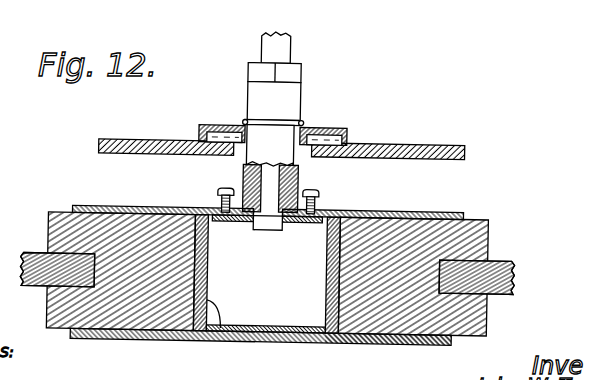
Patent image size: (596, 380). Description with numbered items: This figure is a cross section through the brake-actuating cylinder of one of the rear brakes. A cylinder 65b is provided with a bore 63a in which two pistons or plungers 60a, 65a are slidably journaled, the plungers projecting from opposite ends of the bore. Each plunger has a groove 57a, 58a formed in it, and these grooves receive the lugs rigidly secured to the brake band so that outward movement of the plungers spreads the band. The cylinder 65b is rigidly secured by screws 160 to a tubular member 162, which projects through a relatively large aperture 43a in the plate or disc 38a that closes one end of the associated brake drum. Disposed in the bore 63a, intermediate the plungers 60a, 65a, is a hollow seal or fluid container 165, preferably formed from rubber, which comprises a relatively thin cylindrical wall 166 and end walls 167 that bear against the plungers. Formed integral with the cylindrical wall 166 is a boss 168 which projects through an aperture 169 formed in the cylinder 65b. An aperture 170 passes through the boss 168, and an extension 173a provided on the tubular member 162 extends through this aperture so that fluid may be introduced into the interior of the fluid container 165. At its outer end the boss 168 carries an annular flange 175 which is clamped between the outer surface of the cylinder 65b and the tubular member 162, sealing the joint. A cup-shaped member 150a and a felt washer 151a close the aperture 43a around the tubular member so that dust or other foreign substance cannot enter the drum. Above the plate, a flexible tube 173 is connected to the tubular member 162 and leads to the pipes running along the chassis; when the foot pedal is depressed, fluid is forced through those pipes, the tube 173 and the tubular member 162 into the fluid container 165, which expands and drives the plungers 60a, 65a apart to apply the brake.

The flexible tube 173 is at (283, 50).
The extension 173a is at (268, 231).
The felt washer 151a is at (232, 129).
The cup-shaped member 150a is at (201, 134).
The aperture 43a is at (307, 146).
The plate or disc 38a is at (432, 149).
The aperture 169 is at (242, 212).
The tubular member 162 is at (298, 176).
The annular flange 175 is at (300, 200).
The screws 160 is at (220, 192).
The aperture 170 is at (253, 222).
The boss 168 is at (282, 222).
The plunger 60a is at (133, 229).
The plunger 65a is at (367, 231).
The cylinder 65b is at (318, 343).
The groove 57a is at (95, 288).
The groove 58a is at (438, 259).
The end walls 167 is at (208, 267).
The bore 63a is at (183, 333).
The fluid container 165 is at (221, 330).
The cylindrical wall 166 is at (275, 332).